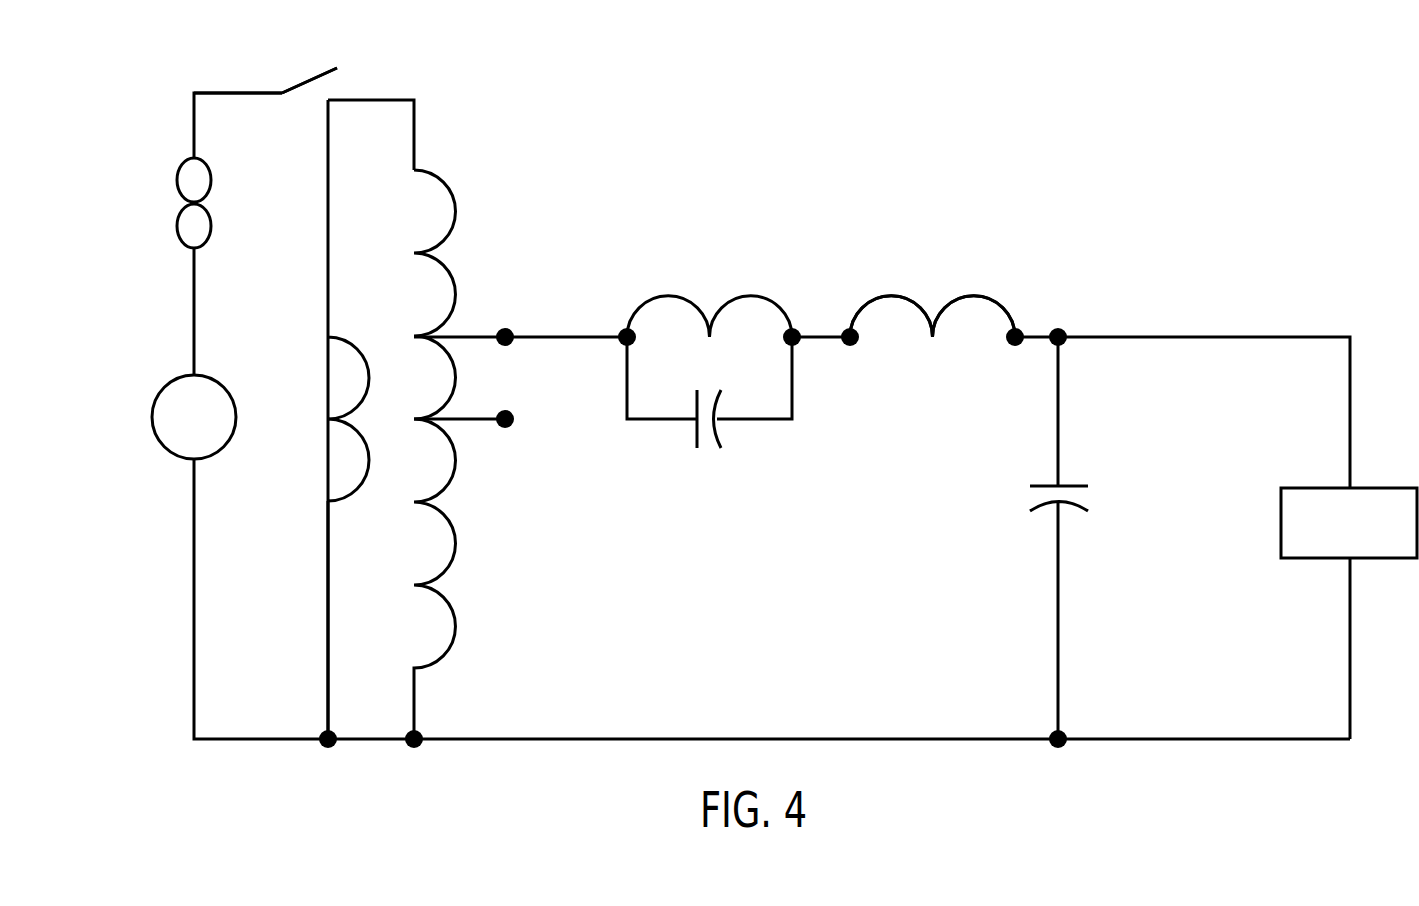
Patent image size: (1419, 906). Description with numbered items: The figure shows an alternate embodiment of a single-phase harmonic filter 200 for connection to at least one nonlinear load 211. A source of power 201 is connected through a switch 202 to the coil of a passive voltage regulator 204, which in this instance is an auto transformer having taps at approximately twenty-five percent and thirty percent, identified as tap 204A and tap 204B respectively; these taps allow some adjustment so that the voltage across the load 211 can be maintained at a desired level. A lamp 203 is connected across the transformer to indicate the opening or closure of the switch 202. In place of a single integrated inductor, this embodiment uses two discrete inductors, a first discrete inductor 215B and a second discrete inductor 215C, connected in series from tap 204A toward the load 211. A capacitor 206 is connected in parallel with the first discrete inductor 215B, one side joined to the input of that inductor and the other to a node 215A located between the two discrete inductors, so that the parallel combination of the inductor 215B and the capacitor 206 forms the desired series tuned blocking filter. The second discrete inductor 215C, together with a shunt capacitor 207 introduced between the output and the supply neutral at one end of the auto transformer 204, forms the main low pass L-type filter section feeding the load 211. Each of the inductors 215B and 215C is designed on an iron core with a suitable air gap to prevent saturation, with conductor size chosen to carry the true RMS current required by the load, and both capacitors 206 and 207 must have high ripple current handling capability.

The single-phase harmonic filter 200 is at (1045, 170).
The source of power 201 is at (173, 453).
The switch 202 is at (356, 82).
The lamp 203 is at (344, 338).
The passive voltage regulator 204 is at (443, 575).
The tap 204A is at (508, 327).
The tap 204B is at (506, 428).
The capacitor 206 is at (713, 437).
The shunt capacitor 207 is at (1078, 480).
The nonlinear load 211 is at (1281, 522).
The node 215A is at (822, 337).
The discrete inductor 215B is at (667, 292).
The discrete inductor 215C is at (975, 297).